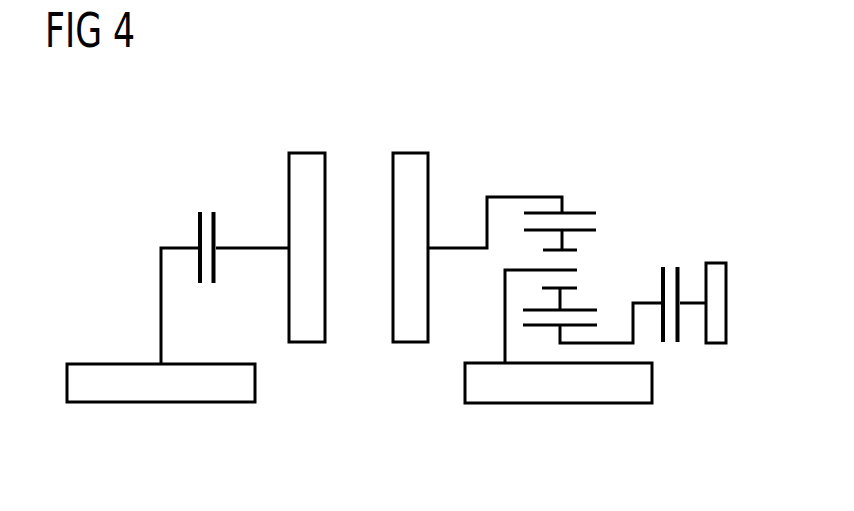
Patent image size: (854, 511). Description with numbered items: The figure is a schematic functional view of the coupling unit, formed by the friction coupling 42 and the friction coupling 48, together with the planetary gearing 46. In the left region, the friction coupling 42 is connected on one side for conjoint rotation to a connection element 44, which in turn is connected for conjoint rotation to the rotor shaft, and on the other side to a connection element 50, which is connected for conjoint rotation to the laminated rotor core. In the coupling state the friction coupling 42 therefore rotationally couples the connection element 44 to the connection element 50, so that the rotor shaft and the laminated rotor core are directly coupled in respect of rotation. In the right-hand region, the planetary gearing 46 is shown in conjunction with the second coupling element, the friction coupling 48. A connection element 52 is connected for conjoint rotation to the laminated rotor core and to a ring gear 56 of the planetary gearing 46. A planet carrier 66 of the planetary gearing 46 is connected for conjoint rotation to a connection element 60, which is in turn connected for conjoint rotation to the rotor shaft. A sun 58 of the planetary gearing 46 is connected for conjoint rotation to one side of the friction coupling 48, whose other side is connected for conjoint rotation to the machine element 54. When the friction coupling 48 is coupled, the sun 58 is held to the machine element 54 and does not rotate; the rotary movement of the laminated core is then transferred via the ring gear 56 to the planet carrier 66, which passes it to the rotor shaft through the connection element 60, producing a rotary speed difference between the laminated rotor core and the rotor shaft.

The friction coupling 42 is at (203, 195).
The connection element 44 is at (92, 378).
The planetary gearing 46 is at (555, 234).
The friction coupling 48 is at (670, 250).
The connection element 50 is at (310, 167).
The connection element 52 is at (412, 168).
The machine element 54 is at (717, 297).
The ring gear 56 is at (577, 210).
The sun 58 is at (538, 327).
The connection element 60 is at (560, 410).
The planet carrier 66 is at (515, 268).